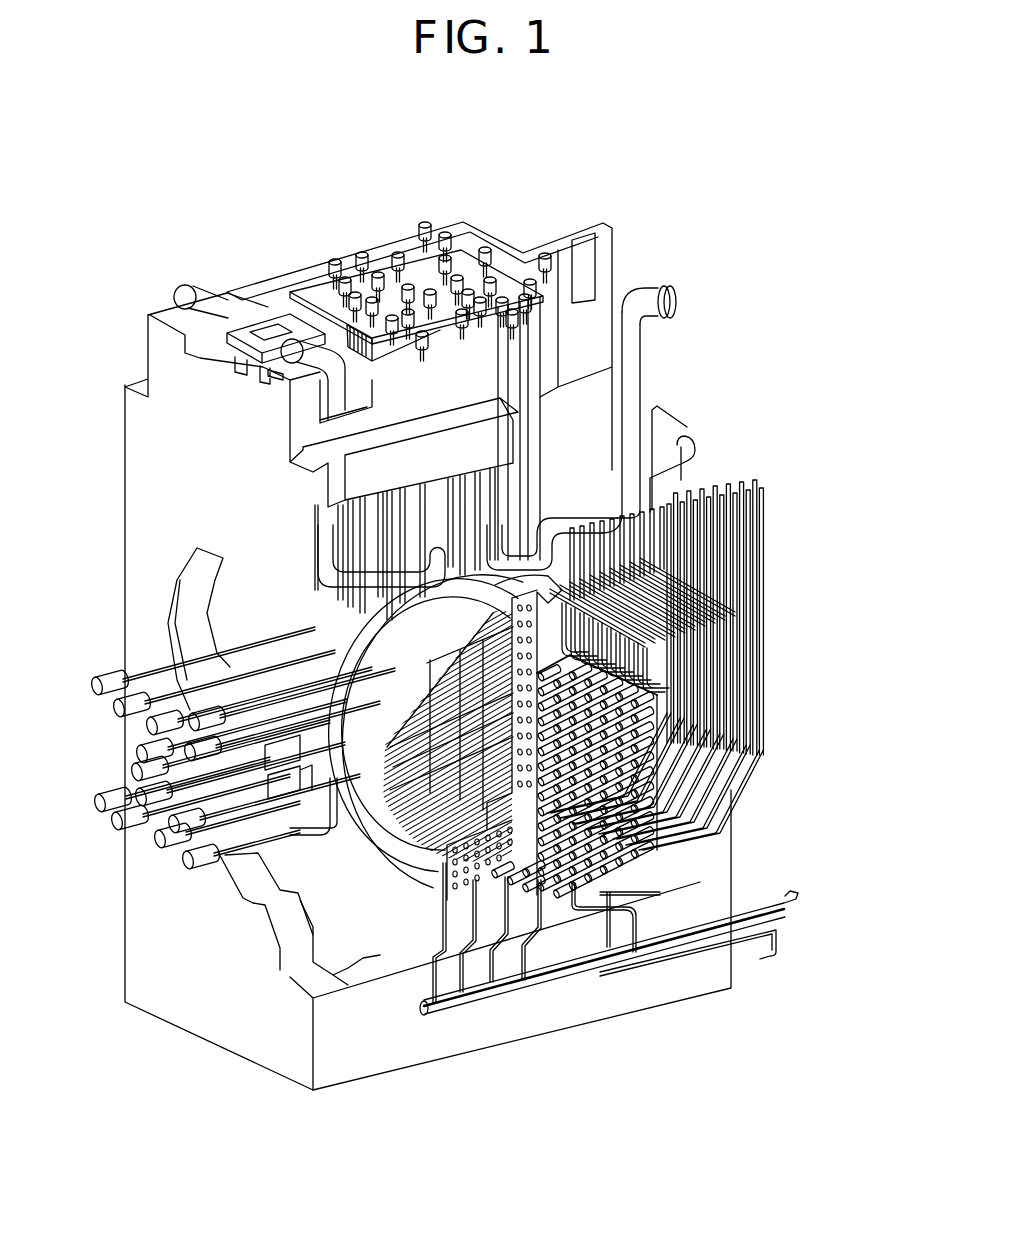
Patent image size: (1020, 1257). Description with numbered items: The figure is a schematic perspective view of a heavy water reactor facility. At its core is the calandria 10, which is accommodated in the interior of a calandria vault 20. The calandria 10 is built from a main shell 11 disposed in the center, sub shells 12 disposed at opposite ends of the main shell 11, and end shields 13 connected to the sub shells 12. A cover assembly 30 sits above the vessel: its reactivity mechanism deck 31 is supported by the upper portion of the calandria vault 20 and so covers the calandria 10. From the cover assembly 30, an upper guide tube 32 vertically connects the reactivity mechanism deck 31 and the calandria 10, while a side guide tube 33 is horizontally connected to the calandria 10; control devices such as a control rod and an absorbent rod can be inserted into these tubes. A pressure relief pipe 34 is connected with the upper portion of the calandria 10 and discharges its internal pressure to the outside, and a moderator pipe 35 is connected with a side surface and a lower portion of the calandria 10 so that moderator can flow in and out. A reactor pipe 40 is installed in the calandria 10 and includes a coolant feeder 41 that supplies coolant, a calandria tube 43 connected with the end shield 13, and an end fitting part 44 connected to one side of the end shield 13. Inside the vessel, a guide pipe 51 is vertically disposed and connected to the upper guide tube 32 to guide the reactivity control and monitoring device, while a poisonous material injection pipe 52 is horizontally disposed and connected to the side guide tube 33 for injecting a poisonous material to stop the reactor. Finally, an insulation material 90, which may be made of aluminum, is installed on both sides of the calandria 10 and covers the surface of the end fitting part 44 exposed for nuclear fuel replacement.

The calandria 10 is at (468, 1122).
The main shell 11 is at (380, 860).
The sub shell 12 is at (440, 850).
The end shield 13 is at (520, 853).
The calandria vault 20 is at (218, 1015).
The cover assembly 30 is at (716, 247).
The reactivity mechanism deck 31 is at (507, 307).
The upper guide tube 32 is at (508, 535).
The side guide tube 33 is at (676, 302).
The pressure relief pipe 34 is at (640, 362).
The moderator pipe 35 is at (262, 548).
The reactor pipe 40 is at (826, 528).
The coolant feeder 41 is at (763, 540).
The calandria tube 43 is at (340, 653).
The end fitting part 44 is at (700, 765).
The guide pipe 51 is at (520, 660).
The poisonous material injection pipe 52 is at (407, 853).
The insulation material 90 is at (570, 873).